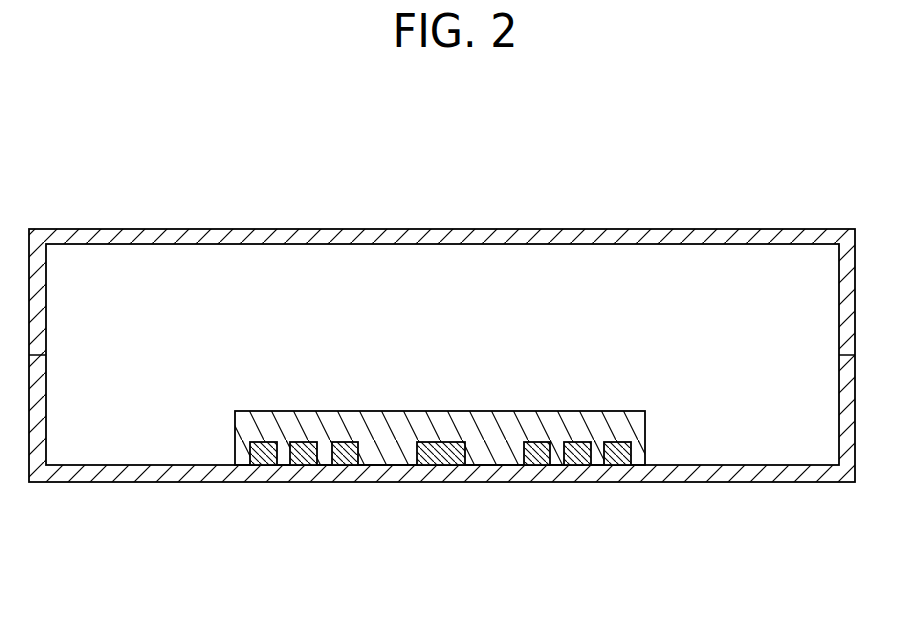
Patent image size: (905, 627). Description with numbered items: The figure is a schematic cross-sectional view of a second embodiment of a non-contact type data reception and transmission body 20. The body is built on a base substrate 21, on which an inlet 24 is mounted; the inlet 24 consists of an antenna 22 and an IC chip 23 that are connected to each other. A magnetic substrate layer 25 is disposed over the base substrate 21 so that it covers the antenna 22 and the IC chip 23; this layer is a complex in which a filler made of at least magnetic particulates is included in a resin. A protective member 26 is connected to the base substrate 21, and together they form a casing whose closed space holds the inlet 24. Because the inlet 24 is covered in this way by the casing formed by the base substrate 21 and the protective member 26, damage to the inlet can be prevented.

The non-contact type data reception and transmission body 20 is at (810, 186).
The base substrate 21 is at (253, 465).
The antenna 22 is at (343, 450).
The IC chip 23 is at (438, 453).
The inlet 24 is at (230, 550).
The magnetic substrate layer 25 is at (500, 453).
The protective member 26 is at (450, 241).